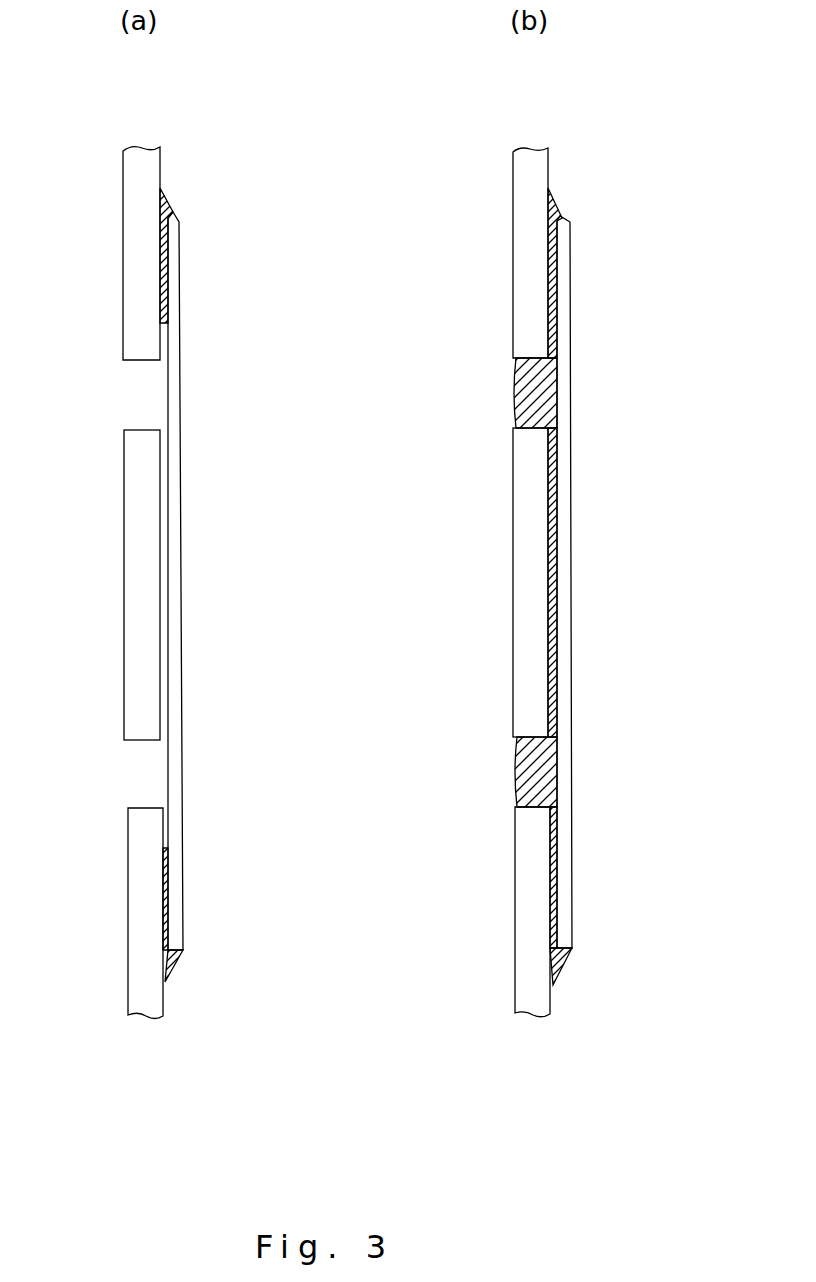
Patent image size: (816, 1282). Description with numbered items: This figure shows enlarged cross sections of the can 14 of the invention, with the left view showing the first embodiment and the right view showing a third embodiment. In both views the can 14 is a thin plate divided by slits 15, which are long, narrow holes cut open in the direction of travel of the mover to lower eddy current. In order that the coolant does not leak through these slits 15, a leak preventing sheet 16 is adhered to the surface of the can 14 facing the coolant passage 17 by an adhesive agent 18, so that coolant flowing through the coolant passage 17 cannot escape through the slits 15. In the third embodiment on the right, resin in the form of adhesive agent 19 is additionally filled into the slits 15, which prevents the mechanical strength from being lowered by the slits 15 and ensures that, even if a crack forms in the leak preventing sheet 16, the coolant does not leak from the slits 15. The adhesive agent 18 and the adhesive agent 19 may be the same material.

The can 14 is at (130, 266).
The slits 15 is at (133, 380).
The leak preventing sheet 16 is at (178, 402).
The coolant passage 17 is at (197, 485).
The adhesive agent 18 is at (165, 205).
The adhesive agent 19 is at (530, 400).